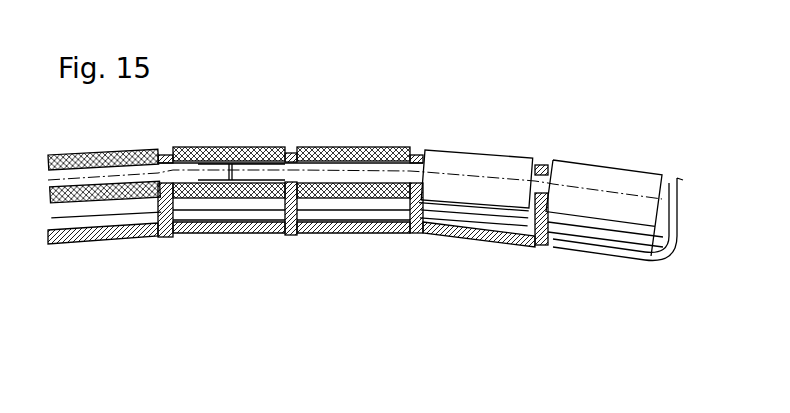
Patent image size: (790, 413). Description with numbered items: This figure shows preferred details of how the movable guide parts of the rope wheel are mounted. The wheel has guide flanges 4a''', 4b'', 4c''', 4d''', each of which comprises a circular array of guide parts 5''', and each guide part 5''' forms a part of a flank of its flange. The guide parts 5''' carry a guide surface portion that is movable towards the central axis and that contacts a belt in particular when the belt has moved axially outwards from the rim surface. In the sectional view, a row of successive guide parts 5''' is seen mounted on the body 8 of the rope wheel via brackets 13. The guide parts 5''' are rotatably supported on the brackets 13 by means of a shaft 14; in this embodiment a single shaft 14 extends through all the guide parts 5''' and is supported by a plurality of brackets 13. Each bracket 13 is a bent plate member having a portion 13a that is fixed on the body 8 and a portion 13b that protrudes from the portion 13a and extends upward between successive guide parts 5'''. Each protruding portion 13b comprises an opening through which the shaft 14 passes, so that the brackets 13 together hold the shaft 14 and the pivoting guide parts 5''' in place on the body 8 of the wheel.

The shaft 14 is at (85, 175).
The guide part 5''' is at (355, 145).
The guide flange 4a''' is at (311, 126).
The guide flange 4b'' is at (227, 183).
The guide flange 4c''' is at (360, 183).
The guide flange 4d''' is at (540, 203).
The bracket 13 is at (167, 155).
The portion fixed on the body 13a is at (145, 237).
The protruding portion 13b is at (200, 235).
The body 8 is at (327, 277).